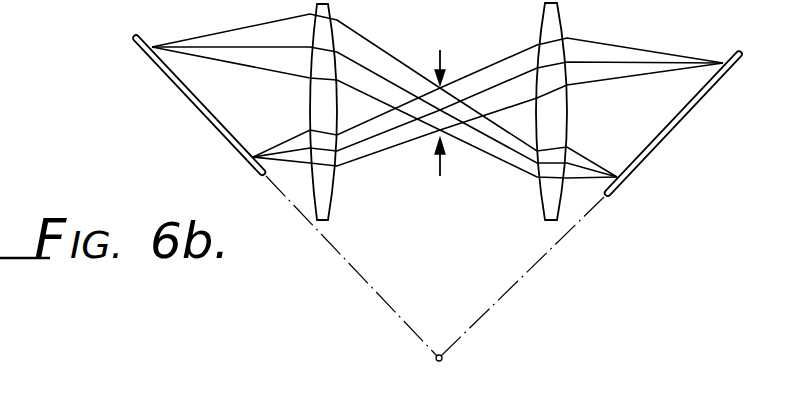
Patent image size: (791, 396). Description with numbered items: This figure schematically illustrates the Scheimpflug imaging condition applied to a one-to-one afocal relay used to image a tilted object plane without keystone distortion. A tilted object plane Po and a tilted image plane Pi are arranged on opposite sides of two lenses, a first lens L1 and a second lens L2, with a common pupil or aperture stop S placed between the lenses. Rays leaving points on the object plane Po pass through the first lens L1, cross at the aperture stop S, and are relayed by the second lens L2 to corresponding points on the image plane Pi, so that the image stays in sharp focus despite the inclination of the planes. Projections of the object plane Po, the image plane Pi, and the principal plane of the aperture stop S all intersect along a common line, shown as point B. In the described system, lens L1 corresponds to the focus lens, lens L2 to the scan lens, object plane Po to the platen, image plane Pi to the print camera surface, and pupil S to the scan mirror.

The oblique image plane Pi is at (199, 105).
The first lens L1 is at (311, 100).
The common pupil or aperture stop S is at (436, 139).
The second lens L2 is at (567, 129).
The oblique object plane Po is at (648, 158).
The common intersection point B is at (443, 357).